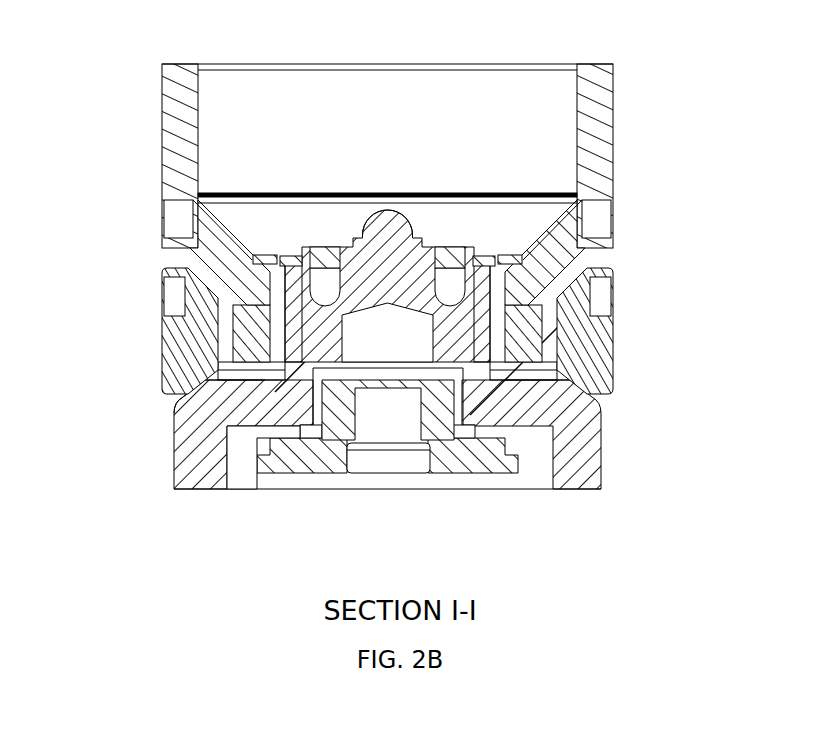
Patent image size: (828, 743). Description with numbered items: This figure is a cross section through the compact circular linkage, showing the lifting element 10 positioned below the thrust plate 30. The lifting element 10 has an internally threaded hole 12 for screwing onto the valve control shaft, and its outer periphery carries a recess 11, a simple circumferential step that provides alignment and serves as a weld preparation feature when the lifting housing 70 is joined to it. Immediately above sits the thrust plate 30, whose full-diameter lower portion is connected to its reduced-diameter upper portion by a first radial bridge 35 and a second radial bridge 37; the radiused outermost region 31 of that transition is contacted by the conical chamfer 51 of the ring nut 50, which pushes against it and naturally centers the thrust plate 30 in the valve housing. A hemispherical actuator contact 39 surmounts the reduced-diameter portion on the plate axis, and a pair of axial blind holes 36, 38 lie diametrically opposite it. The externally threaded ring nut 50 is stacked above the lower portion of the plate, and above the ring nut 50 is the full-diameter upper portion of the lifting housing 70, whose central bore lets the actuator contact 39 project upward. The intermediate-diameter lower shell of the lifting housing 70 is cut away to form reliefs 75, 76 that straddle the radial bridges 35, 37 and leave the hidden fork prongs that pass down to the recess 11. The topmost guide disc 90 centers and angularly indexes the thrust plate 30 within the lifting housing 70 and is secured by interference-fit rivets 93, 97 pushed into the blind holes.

The lifting element 10 is at (293, 463).
The recess 11 is at (238, 440).
The internally threaded hole 12 is at (363, 415).
The thrust plate 30 is at (583, 470).
The radially outermost region 31 is at (180, 393).
The first radial bridge 35 is at (232, 405).
The axial blind hole 36 is at (497, 308).
The second radial bridge 37 is at (545, 403).
The axial blind hole 38 is at (305, 283).
The actuator contact 39 is at (390, 210).
The ring nut 50 is at (165, 262).
The conical chamfer 51 is at (200, 372).
The lifting housing 70 is at (162, 110).
The relief 75 is at (240, 345).
The relief 76 is at (523, 355).
The guide disc 90 is at (520, 253).
The rivet 93 is at (317, 250).
The rivet 97 is at (453, 250).